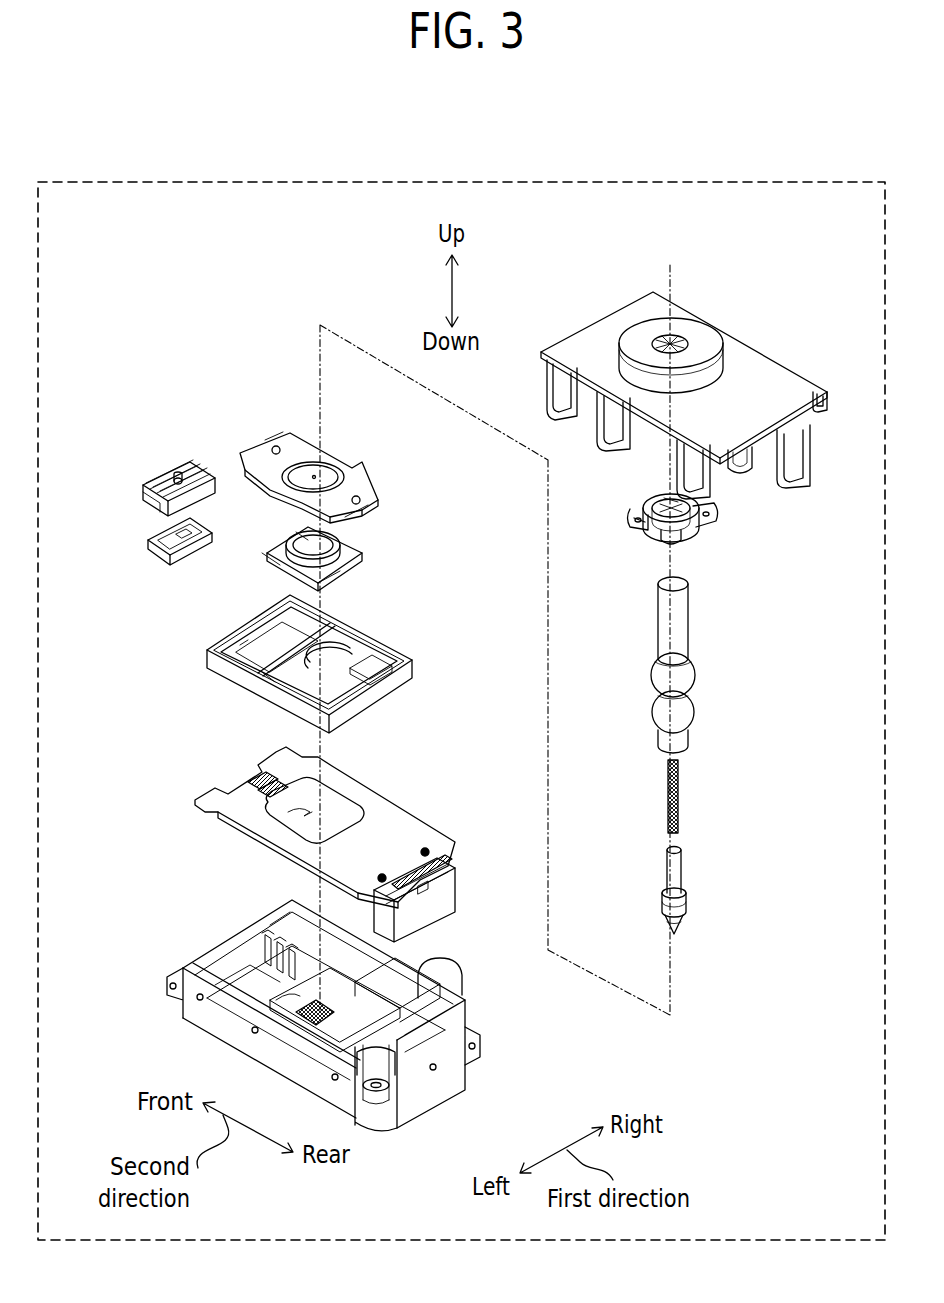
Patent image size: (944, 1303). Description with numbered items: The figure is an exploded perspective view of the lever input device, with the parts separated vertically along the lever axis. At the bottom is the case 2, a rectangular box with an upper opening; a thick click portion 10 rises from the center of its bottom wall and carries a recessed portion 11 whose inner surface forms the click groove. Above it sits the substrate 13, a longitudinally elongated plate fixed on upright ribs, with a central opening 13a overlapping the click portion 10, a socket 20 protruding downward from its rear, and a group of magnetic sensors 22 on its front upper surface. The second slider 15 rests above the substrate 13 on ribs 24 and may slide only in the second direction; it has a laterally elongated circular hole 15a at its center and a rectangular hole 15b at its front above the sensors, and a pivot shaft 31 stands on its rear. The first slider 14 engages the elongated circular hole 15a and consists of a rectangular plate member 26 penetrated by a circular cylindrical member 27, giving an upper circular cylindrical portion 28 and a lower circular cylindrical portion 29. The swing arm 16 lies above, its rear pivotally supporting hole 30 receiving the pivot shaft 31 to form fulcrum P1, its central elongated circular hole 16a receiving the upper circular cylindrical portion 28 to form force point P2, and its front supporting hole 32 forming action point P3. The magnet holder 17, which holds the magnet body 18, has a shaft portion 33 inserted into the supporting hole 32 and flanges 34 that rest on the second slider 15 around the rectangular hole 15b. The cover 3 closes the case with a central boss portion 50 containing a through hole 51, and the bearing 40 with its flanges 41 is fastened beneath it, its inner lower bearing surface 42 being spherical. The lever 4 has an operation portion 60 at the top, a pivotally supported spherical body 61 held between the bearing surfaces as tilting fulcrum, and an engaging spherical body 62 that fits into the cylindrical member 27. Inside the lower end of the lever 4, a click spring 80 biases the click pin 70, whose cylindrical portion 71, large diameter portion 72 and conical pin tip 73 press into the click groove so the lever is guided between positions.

The case 2 is at (184, 940).
The cover 3 is at (744, 355).
The lever 4 is at (745, 610).
The click portion 10 is at (305, 1020).
The recessed portion 11 is at (270, 925).
The substrate 13 is at (427, 776).
The opening 13a is at (275, 812).
The first slider 14 is at (412, 565).
The second slider 15 is at (410, 623).
The elongated circular hole 15a is at (268, 676).
The rectangular hole 15b is at (225, 660).
The swing arm 16 is at (407, 471).
The elongated circular hole 16a is at (336, 463).
The magnet holder 17 is at (130, 483).
The magnet body 18 is at (160, 560).
The socket 20 is at (460, 890).
The magnetic sensors 22 is at (255, 782).
The ribs 24 is at (405, 988).
The rectangular plate member 26 is at (272, 555).
The circular cylindrical member 27 is at (300, 535).
The upper circular cylindrical portion 28 is at (338, 543).
The lower circular cylindrical portion 29 is at (335, 570).
The pivotally supporting hole 30 is at (372, 500).
The pivot shaft 31 is at (385, 672).
The supporting hole 32 is at (270, 436).
The shaft portion 33 is at (168, 475).
The flanges 34 is at (143, 492).
The bearing 40 is at (718, 520).
The flanges 41 is at (635, 515).
The lower bearing surface 42 is at (664, 495).
The boss portion 50 is at (676, 326).
The through hole 51 is at (654, 330).
The operation portion 60 is at (663, 642).
The pivotally supported spherical body 61 is at (696, 668).
The engaging spherical body 62 is at (696, 708).
The click pin 70 is at (697, 878).
The cylindrical portion 71 is at (667, 872).
The large diameter portion 72 is at (660, 906).
The pin tip 73 is at (684, 920).
The click spring 80 is at (680, 790).
The fulcrum P1 is at (362, 491).
The force point P2 is at (319, 468).
The action point P3 is at (282, 440).